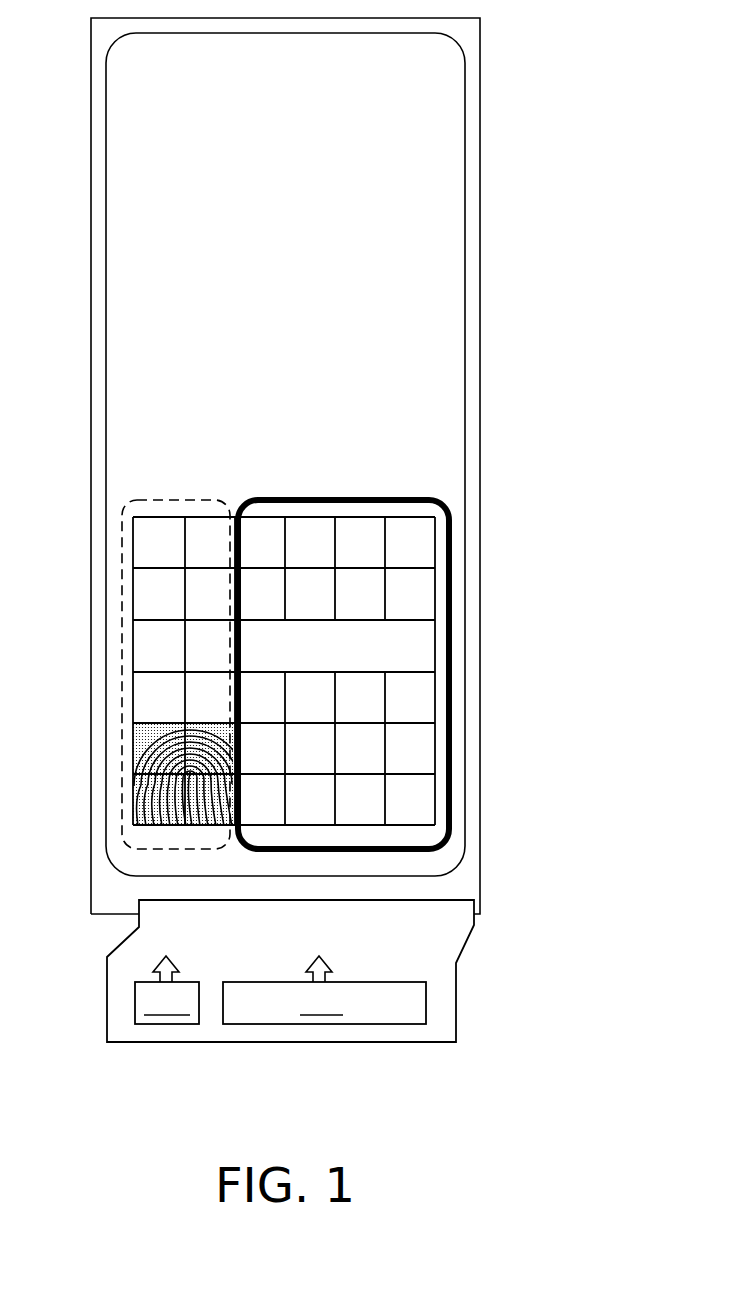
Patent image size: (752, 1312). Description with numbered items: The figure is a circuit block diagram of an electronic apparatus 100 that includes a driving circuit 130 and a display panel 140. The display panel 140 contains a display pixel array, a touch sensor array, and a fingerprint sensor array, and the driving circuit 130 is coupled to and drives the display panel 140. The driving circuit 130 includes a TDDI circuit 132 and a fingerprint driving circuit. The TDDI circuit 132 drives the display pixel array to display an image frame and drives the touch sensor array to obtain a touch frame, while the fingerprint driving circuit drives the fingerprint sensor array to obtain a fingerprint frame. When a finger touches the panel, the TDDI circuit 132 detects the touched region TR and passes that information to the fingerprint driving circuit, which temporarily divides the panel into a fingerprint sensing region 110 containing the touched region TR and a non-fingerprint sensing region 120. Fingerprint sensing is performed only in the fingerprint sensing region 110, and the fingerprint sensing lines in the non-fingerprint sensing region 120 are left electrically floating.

The electronic apparatus 100 is at (588, 1035).
The fingerprint sensing region 110 is at (122, 605).
The non-fingerprint sensing region 120 is at (451, 604).
The driving circuit 130 is at (458, 932).
The TDDI circuit 132 is at (392, 1013).
The display panel 140 is at (268, 363).
The touched region TR is at (152, 752).